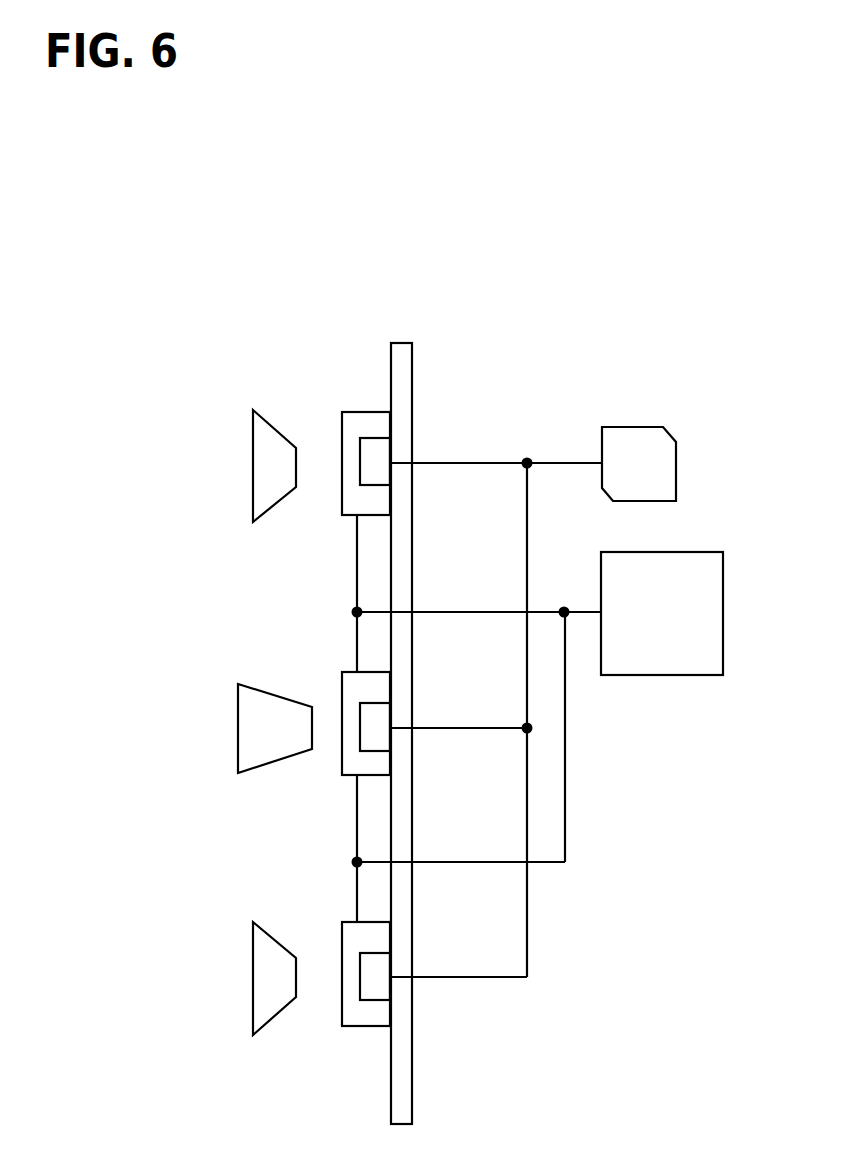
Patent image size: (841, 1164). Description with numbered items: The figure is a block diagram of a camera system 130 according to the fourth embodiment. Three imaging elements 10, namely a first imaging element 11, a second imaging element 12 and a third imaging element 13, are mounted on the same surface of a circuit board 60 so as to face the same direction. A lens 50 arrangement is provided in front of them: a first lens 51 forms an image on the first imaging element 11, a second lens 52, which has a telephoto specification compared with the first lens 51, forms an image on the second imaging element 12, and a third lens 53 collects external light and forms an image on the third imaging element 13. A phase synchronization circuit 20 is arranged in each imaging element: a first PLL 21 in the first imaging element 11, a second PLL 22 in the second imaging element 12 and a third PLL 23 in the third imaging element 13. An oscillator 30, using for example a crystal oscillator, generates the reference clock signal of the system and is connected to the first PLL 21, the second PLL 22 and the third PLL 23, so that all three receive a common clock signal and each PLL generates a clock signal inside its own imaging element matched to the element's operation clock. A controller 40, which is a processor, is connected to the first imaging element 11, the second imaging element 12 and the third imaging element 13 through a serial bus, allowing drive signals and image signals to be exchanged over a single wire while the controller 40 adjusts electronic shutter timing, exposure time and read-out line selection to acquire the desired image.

The camera system 130 is at (597, 337).
The circuit board 60 is at (401, 343).
The imaging elements 10 is at (375, 460).
The first imaging element 11 is at (346, 412).
The second imaging element 12 is at (342, 768).
The third imaging element 13 is at (342, 1010).
The phase synchronization circuit 20 is at (416, 477).
The first PLL 21 is at (381, 438).
The second PLL 22 is at (383, 752).
The third PLL 23 is at (383, 1002).
The oscillator 30 is at (676, 468).
The controller 40 is at (723, 617).
The lens 50 is at (239, 481).
The first lens 51 is at (253, 420).
The second lens 52 is at (238, 698).
The third lens 53 is at (253, 935).